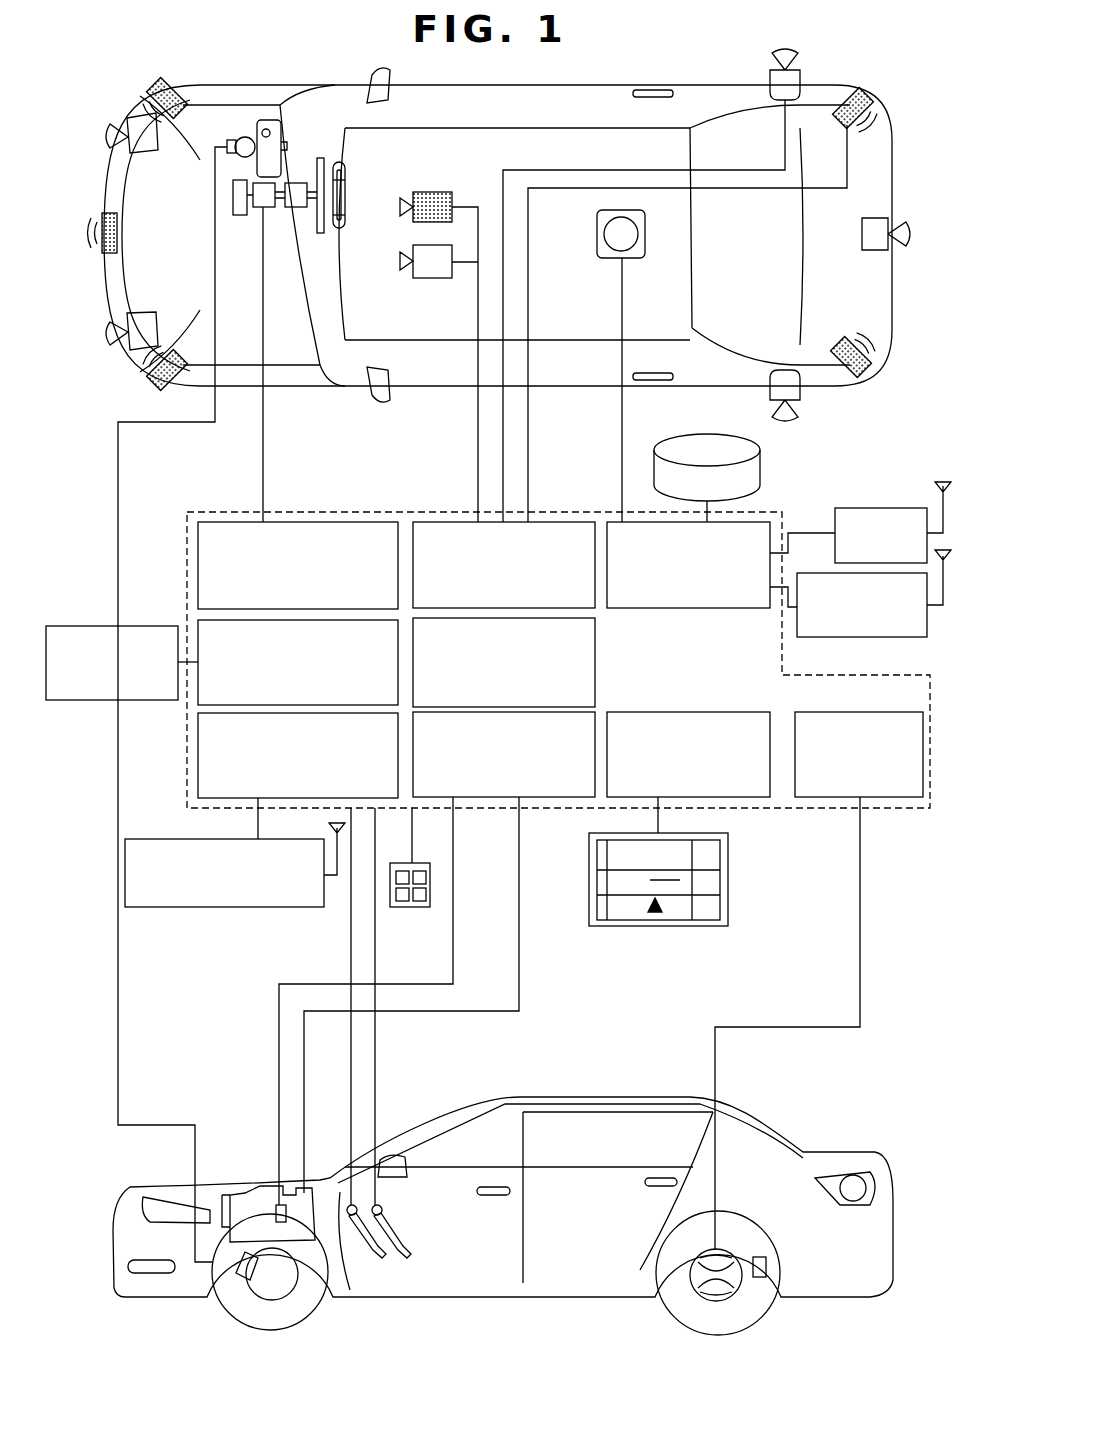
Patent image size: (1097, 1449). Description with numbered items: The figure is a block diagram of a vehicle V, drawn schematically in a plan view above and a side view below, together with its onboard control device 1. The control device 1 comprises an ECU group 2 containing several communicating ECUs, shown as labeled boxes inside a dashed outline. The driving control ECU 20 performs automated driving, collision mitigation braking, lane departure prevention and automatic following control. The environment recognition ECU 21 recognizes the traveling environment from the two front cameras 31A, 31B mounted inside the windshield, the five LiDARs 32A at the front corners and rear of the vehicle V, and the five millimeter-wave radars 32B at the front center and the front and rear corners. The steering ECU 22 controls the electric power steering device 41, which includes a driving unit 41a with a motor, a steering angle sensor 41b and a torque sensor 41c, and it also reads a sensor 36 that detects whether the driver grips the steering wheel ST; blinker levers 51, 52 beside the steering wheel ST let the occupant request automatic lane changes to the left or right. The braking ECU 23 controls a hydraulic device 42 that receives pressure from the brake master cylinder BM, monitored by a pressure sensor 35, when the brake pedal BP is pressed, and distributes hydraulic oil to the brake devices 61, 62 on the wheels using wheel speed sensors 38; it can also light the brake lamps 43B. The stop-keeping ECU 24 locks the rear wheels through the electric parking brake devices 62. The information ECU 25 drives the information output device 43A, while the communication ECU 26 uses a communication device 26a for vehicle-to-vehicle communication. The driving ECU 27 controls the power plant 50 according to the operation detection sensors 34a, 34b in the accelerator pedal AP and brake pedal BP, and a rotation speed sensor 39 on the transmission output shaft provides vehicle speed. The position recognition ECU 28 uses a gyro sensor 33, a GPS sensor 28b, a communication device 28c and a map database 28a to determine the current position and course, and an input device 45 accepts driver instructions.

The control device 1 is at (896, 470).
The ECU group 2 is at (395, 512).
The vehicle V is at (900, 136).
The driving control ECU 20 is at (596, 660).
The environment recognition ECU 21 is at (426, 520).
The steering ECU 22 is at (292, 520).
The braking ECU 23 is at (197, 702).
The stop-keeping ECU 24 is at (906, 804).
The information ECU 25 is at (772, 797).
The communication ECU 26 is at (198, 778).
The communication device 26a is at (238, 907).
The driving ECU 27 is at (492, 797).
The position recognition ECU 28 is at (782, 522).
The database 28a is at (700, 433).
The GPS sensor 28b is at (851, 508).
The communication device 28c is at (886, 637).
The camera 31A is at (413, 282).
The camera 31B is at (456, 197).
The LiDAR 32A is at (142, 156).
The millimeter-wave radar 32B is at (185, 84).
The gyro sensor 33 is at (607, 258).
The operation detection sensor 34a is at (351, 1217).
The operation detection sensor 34b is at (385, 1212).
The pressure sensor 35 is at (268, 120).
The sensor 36 is at (346, 196).
The wheel speed sensor 38 is at (765, 1278).
The rotation speed sensor 39 is at (277, 1204).
The electric power steering device 41 is at (255, 172).
The driving unit 41a is at (277, 208).
The steering angle sensor 41b is at (237, 217).
The torque sensor 41c is at (298, 181).
The hydraulic device 42 is at (58, 626).
The information output device 43A is at (687, 926).
The brake lamp 43B is at (851, 1175).
The input device 45 is at (414, 907).
The power plant 50 is at (306, 1240).
The blinker lever 51 is at (326, 226).
The blinker lever 52 is at (339, 162).
The brake device 61 is at (245, 1282).
The electric parking brake device 62 is at (702, 1298).
The accelerator pedal AP is at (384, 1262).
The brake pedal BP is at (405, 1262).
The brake master cylinder BM is at (243, 135).
The steering wheel ST is at (346, 168).